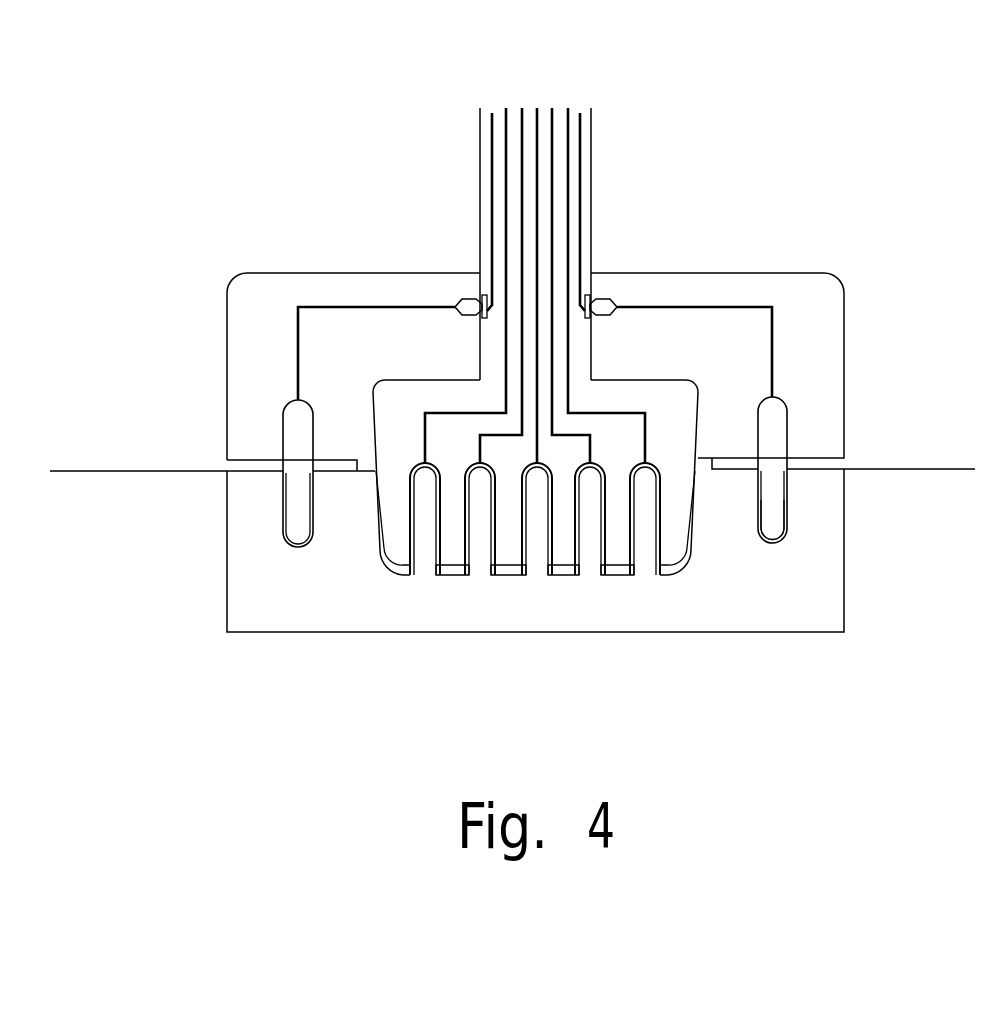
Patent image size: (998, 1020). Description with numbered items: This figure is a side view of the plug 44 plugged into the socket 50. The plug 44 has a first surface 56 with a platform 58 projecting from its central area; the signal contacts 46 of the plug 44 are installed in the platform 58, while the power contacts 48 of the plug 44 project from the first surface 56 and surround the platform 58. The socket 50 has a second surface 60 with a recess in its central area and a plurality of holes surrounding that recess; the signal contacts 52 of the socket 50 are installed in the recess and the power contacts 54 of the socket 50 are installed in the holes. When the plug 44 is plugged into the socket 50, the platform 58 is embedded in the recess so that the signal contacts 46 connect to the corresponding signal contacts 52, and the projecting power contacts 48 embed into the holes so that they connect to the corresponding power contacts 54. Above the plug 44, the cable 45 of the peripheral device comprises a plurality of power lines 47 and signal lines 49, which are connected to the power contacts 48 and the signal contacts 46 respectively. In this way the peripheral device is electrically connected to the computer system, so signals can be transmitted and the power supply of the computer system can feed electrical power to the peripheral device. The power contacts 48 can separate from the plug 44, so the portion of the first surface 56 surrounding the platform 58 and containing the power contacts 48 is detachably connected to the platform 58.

The plug 44 is at (860, 243).
The cable 45 is at (611, 208).
The signal contacts 46 is at (655, 463).
The power lines 47 is at (488, 151).
The power contacts 48 is at (770, 513).
The signal lines 49 is at (573, 95).
The socket 50 is at (899, 628).
The signal contacts 52 is at (590, 548).
The power contacts 54 is at (768, 542).
The first surface 56 is at (810, 462).
The platform 58 is at (373, 403).
The second surface 60 is at (253, 462).